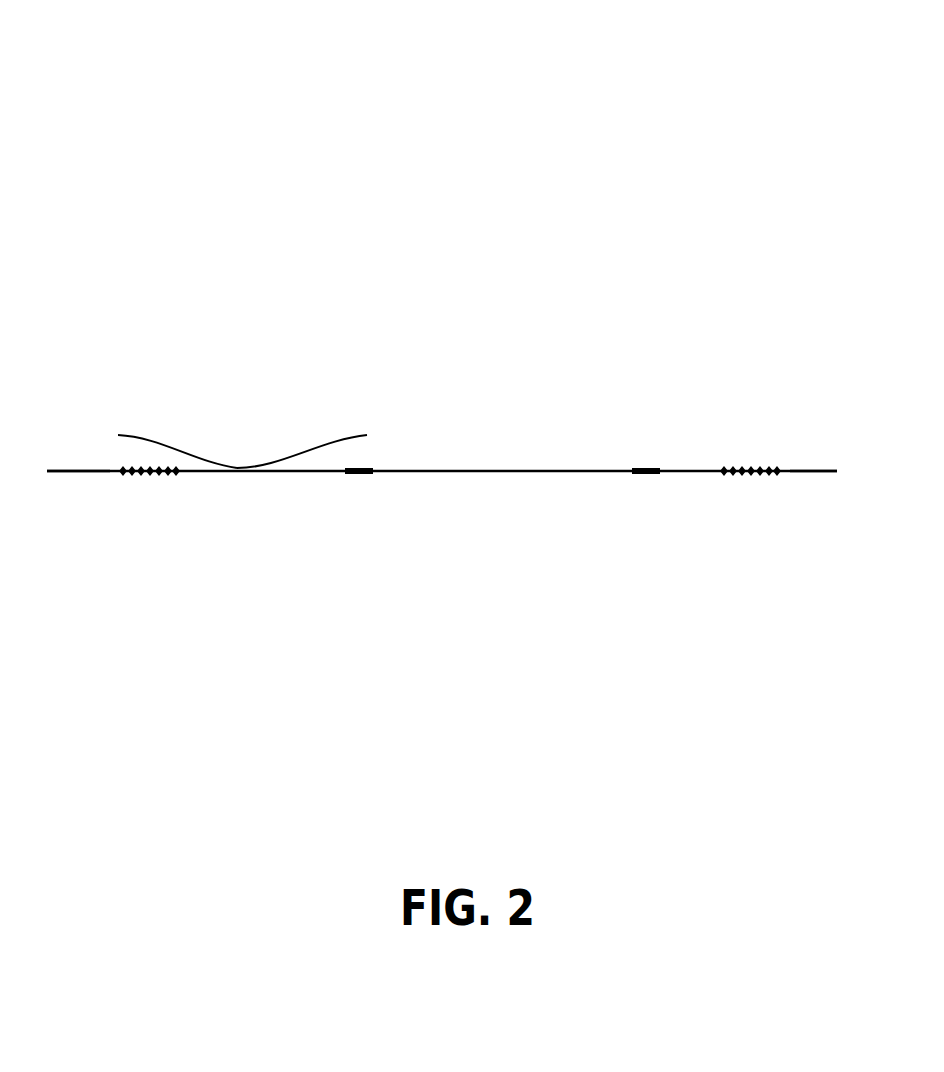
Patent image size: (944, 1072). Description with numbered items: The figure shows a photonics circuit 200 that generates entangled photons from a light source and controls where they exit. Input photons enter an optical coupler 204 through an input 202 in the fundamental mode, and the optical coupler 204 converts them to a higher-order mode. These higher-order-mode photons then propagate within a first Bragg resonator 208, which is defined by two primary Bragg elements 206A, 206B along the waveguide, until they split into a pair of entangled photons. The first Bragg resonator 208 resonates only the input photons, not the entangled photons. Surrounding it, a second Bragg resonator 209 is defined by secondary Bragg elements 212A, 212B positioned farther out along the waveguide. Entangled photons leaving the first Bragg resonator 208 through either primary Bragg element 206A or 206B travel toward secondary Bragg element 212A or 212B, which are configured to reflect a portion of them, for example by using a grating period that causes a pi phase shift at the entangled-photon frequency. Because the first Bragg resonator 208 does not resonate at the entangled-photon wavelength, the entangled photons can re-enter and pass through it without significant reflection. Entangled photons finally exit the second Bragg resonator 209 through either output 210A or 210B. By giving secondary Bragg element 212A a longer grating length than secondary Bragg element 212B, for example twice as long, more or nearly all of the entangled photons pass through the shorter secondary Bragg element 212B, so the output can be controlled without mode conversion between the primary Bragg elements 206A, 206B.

The photonics circuit 200 is at (110, 116).
The input 202 is at (122, 432).
The optical coupler 204 is at (242, 465).
The primary Bragg element 206A is at (363, 477).
The primary Bragg element 206B is at (643, 478).
The first Bragg resonator 208 is at (488, 468).
The second Bragg resonator 209 is at (386, 598).
The output 210A is at (78, 475).
The output 210B is at (823, 470).
The secondary Bragg element 212A is at (160, 476).
The secondary Bragg element 212B is at (757, 478).